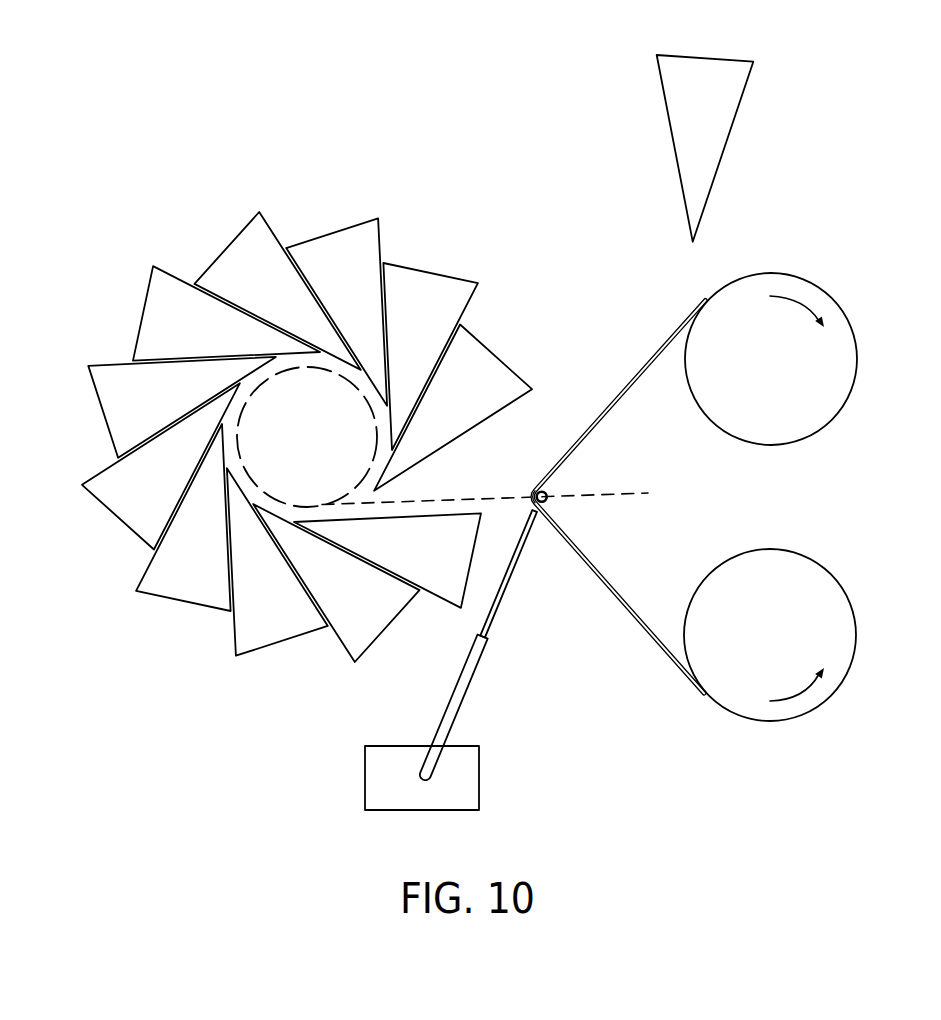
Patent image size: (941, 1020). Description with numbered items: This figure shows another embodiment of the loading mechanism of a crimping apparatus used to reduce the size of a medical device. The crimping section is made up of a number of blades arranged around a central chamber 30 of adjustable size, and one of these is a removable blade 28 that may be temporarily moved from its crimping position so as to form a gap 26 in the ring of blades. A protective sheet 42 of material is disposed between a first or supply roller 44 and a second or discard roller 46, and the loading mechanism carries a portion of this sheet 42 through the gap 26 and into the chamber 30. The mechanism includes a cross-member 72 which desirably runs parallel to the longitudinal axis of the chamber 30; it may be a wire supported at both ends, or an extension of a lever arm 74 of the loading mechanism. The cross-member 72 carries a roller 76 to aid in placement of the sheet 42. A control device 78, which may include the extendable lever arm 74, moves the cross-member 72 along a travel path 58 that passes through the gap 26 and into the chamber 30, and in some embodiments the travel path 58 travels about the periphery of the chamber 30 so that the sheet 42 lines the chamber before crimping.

The gap 26 is at (372, 514).
The removable blade 28 is at (734, 70).
The chamber 30 is at (298, 448).
The protective sheet 42 is at (575, 560).
The supply roller 44 is at (841, 683).
The discard roller 46 is at (828, 292).
The travel path 58 is at (472, 500).
The cross-member 72 is at (547, 509).
The lever arm 74 is at (475, 669).
The roller 76 is at (549, 491).
The control device 78 is at (365, 778).